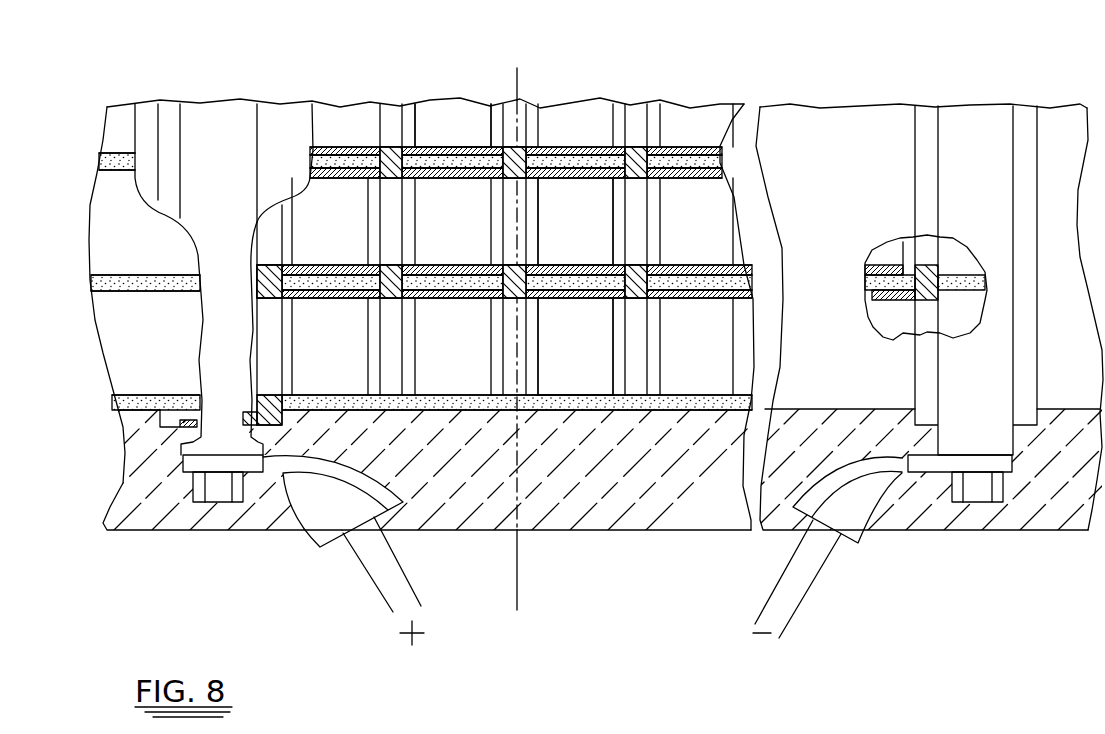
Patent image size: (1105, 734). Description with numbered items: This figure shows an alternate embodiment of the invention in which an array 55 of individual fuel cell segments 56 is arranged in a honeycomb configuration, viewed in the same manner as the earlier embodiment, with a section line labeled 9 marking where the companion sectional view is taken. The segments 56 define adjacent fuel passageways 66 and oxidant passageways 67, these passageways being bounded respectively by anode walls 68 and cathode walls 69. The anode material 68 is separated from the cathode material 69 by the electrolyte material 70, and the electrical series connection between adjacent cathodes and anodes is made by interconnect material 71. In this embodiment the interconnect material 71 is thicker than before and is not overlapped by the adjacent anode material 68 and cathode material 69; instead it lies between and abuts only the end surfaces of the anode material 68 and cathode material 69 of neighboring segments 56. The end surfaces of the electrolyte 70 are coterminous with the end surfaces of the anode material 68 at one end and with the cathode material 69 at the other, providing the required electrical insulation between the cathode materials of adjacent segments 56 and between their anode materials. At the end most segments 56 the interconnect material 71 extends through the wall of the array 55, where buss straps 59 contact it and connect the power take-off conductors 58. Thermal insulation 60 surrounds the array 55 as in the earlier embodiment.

The array 55 is at (561, 49).
The fuel cell segment 56 is at (655, 90).
The section line 9- 9 is at (516, 80).
The buss strap 59 is at (233, 164).
The fuel passageway 66 is at (473, 144).
The oxidant passageway 67 is at (586, 236).
The anode wall 68 is at (725, 298).
The cathode wall 69 is at (708, 178).
The electrolyte material 70 is at (415, 178).
The interconnect material 71 is at (284, 418).
The thermal insulation 60 is at (583, 487).
The power take-off conductor 58 is at (369, 596).